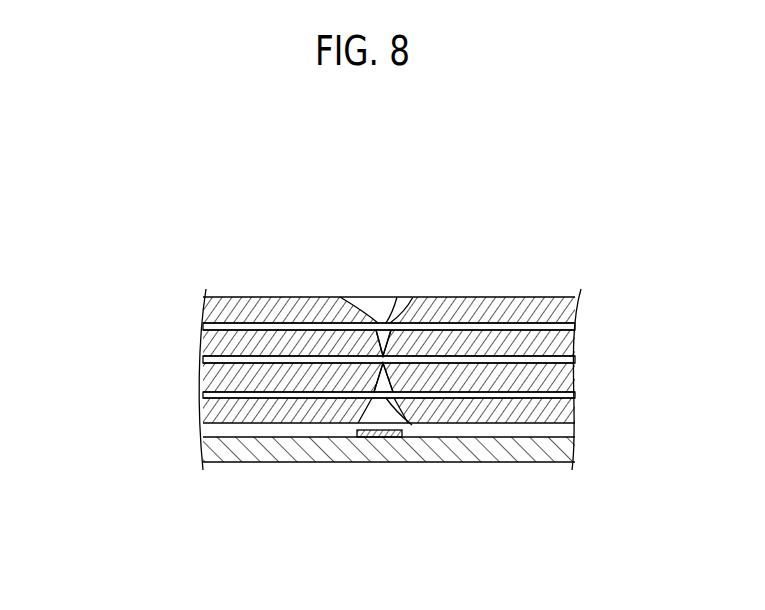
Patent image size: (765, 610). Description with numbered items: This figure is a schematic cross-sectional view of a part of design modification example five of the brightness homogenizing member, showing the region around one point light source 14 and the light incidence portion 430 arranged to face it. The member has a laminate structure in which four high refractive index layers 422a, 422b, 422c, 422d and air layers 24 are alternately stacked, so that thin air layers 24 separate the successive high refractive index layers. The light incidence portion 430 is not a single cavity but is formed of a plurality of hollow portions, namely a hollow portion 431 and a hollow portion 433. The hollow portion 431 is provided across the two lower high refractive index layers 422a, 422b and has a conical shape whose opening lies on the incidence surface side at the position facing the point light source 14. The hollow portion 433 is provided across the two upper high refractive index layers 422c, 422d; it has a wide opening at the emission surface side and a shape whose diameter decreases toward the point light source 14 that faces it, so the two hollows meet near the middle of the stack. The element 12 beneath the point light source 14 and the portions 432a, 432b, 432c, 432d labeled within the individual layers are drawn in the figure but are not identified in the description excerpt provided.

The substrate 12 is at (201, 452).
The point light source 14 is at (418, 439).
The air layer 24 is at (565, 328).
The high refractive index layer 422a is at (201, 411).
The high refractive index layer 422b is at (201, 380).
The high refractive index layer 422c is at (201, 346).
The high refractive index layer 422d is at (201, 318).
The light incidence portion 430 is at (385, 297).
The hollow portion 431 is at (413, 426).
The via hole in layer 422a 432a is at (367, 427).
The via hole in layer 422b 432b is at (405, 418).
The via hole in layer 422c 432c is at (370, 297).
The via hole in layer 422d 432d is at (415, 297).
The hollow portion 433 is at (395, 297).